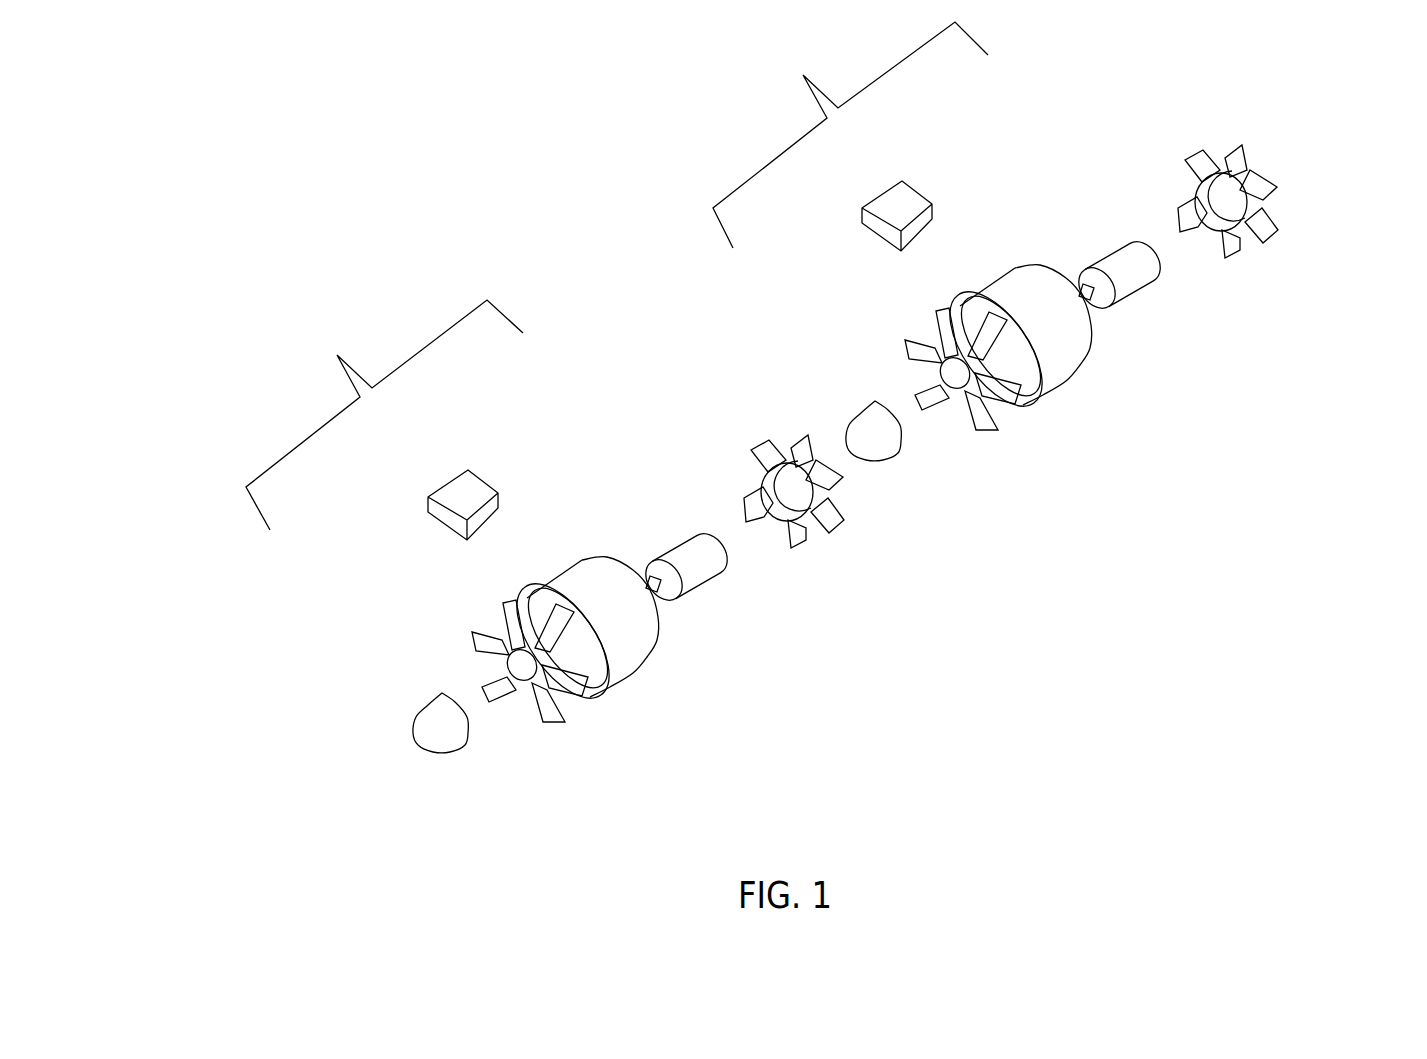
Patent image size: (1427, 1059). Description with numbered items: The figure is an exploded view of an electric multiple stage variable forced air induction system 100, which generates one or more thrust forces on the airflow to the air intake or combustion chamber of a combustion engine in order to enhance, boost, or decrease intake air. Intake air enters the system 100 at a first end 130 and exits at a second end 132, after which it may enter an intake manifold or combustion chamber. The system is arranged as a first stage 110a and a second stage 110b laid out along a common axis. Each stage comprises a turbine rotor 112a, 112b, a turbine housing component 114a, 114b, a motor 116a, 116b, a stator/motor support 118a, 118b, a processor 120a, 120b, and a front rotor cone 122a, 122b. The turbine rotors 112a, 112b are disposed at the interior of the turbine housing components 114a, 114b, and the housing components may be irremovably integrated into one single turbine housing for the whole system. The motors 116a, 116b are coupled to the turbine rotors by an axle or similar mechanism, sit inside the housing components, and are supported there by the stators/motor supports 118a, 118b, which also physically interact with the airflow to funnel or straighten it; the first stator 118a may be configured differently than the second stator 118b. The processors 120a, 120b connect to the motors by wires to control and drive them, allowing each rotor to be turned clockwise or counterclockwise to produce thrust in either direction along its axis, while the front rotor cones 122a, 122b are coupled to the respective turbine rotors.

The electric multiple stage variable forced air induction system 100 is at (262, 224).
The first stage 110a is at (384, 415).
The second stage 110b is at (850, 135).
The first turbine rotor 112a is at (473, 658).
The second turbine rotor 112b is at (888, 349).
The first turbine housing component 114a is at (600, 592).
The second turbine housing component 114b is at (1032, 300).
The first motor 116a is at (682, 560).
The second motor 116b is at (1110, 247).
The first stator/motor support 118a is at (750, 452).
The second stator/motor support 118b is at (1186, 157).
The first processor 120a is at (425, 508).
The second processor 120b is at (857, 215).
The first front rotor cone 122a is at (433, 730).
The second front rotor cone 122b is at (886, 448).
The first end 130 is at (140, 743).
The second end 132 is at (1348, 182).